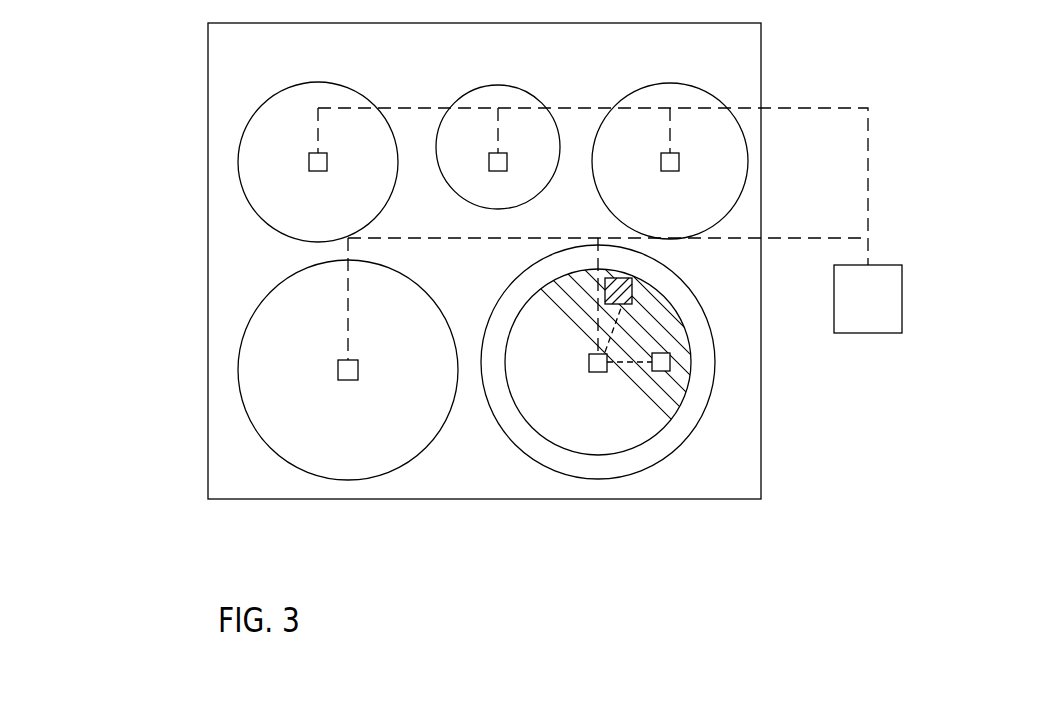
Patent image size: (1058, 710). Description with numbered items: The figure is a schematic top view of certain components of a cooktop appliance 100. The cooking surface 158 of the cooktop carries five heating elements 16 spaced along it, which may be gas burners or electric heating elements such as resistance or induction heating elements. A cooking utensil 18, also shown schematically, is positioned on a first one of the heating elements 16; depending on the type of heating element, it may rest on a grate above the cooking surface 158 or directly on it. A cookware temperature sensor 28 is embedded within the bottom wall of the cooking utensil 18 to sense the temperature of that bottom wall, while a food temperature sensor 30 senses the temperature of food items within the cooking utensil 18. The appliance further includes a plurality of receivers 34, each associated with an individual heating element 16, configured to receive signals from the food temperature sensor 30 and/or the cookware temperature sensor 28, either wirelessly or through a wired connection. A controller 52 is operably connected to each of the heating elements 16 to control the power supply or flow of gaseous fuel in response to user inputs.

The cooktop appliance 100 is at (170, 97).
The cooking surface 158 is at (250, 272).
The heating elements 16 is at (403, 463).
The cooking utensil 18 is at (688, 437).
The cookware temperature sensor 28 is at (670, 360).
The food temperature sensor 30 is at (632, 297).
The receiver 34 is at (507, 160).
The controller 52 is at (902, 302).